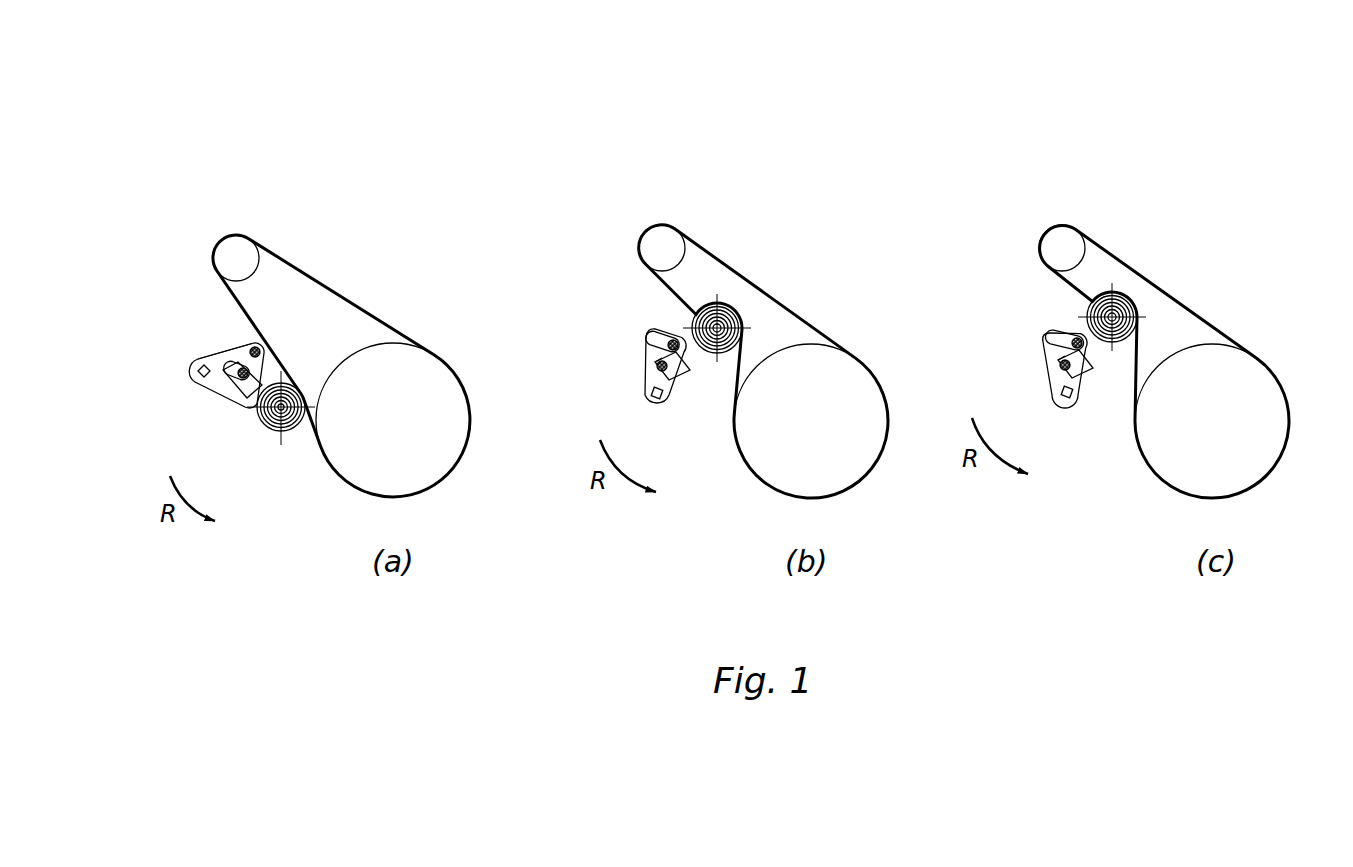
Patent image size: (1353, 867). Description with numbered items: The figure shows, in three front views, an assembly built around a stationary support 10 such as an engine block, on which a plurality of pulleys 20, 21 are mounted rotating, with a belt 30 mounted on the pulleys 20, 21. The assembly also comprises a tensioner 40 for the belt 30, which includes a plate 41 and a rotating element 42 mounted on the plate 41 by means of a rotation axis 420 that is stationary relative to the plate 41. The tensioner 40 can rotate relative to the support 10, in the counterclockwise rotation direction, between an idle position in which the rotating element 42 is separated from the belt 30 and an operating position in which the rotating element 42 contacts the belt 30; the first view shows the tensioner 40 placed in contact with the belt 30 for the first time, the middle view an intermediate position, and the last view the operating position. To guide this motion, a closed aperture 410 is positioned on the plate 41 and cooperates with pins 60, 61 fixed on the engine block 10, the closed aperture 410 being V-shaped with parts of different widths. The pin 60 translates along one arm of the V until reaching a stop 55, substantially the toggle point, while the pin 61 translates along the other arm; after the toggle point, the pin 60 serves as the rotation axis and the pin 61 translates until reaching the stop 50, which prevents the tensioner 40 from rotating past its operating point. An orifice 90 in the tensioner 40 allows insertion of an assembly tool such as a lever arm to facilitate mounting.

The stationary support 10 is at (357, 250).
The pulley 20 is at (238, 252).
The pulley 21 is at (440, 438).
The belt 30 is at (352, 298).
The tensioner 40 is at (200, 398).
The plate 41 is at (213, 358).
The rotating element 42 is at (292, 437).
The stop 50 is at (248, 391).
The stop 55 is at (221, 378).
The pin 60 is at (240, 367).
The pin 61 is at (250, 344).
The orifice 90 is at (197, 373).
The closed aperture 410 is at (264, 352).
The rotation axis 420 is at (295, 397).